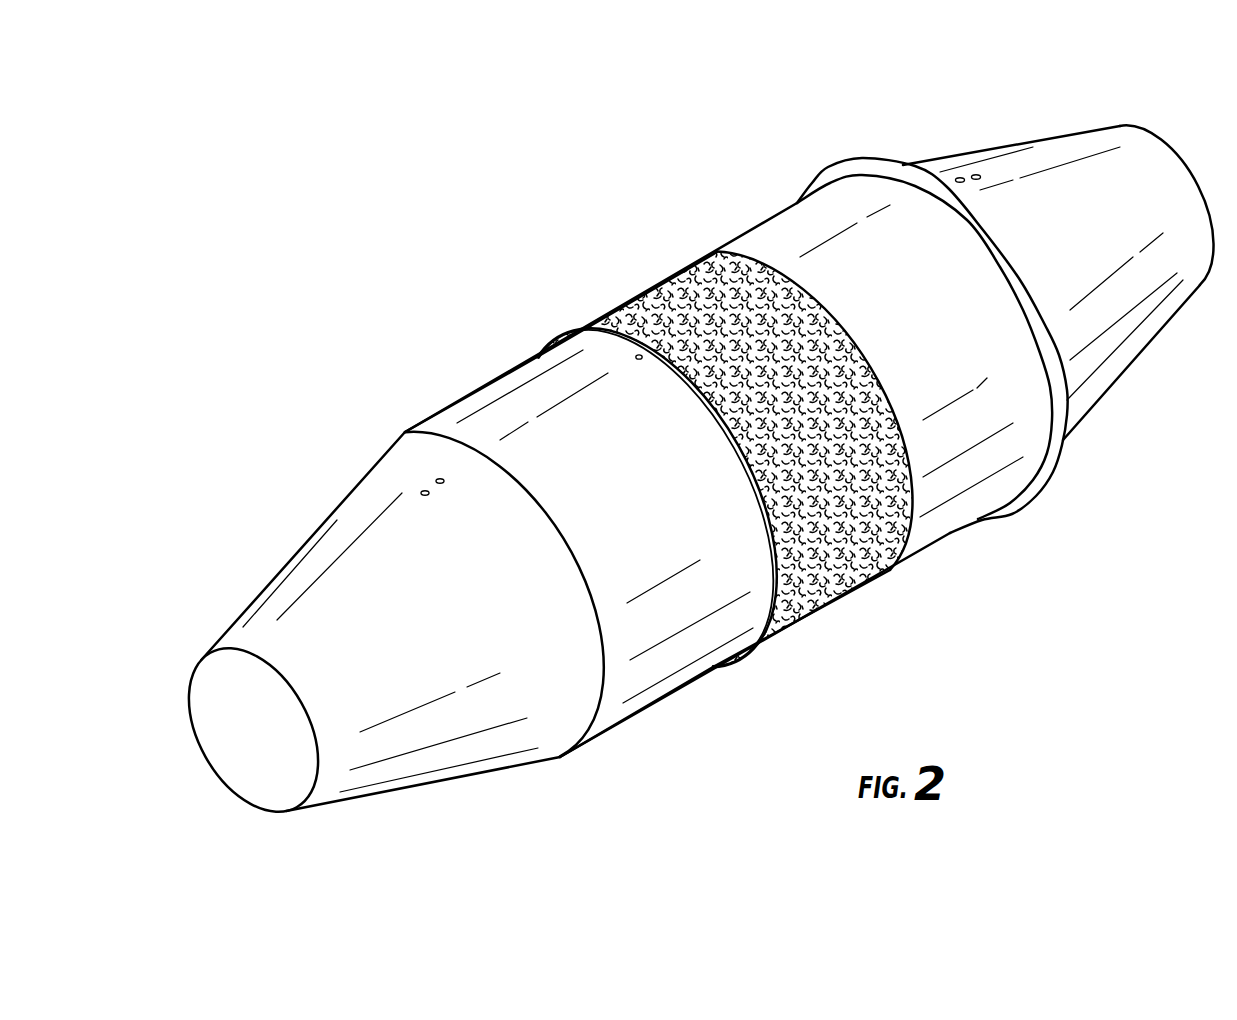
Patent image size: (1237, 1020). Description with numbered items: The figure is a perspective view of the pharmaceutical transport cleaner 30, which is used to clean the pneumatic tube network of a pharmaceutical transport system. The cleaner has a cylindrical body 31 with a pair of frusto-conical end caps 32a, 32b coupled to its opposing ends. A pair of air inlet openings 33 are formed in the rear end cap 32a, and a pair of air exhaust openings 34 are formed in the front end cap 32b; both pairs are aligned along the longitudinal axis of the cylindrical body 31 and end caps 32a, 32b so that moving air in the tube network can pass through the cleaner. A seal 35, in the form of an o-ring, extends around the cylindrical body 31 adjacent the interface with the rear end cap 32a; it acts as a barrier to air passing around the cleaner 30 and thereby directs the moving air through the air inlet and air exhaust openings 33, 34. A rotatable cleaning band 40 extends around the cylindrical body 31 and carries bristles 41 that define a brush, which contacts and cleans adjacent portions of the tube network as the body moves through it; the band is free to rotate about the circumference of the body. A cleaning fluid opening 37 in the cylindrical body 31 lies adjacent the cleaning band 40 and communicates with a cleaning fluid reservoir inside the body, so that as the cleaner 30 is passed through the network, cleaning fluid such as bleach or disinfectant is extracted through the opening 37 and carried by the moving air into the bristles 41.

The pharmaceutical transport cleaner 30 is at (522, 338).
The cylindrical body 31 is at (687, 688).
The frusto-conical end cap 32a is at (1030, 160).
The frusto-conical end cap 32b is at (330, 548).
The air inlet openings 33 is at (976, 174).
The air exhaust openings 34 is at (439, 478).
The seal 35 is at (823, 181).
The cleaning fluid opening 37 is at (638, 355).
The rotatable cleaning band 40 is at (845, 628).
The bristles 41 is at (881, 574).